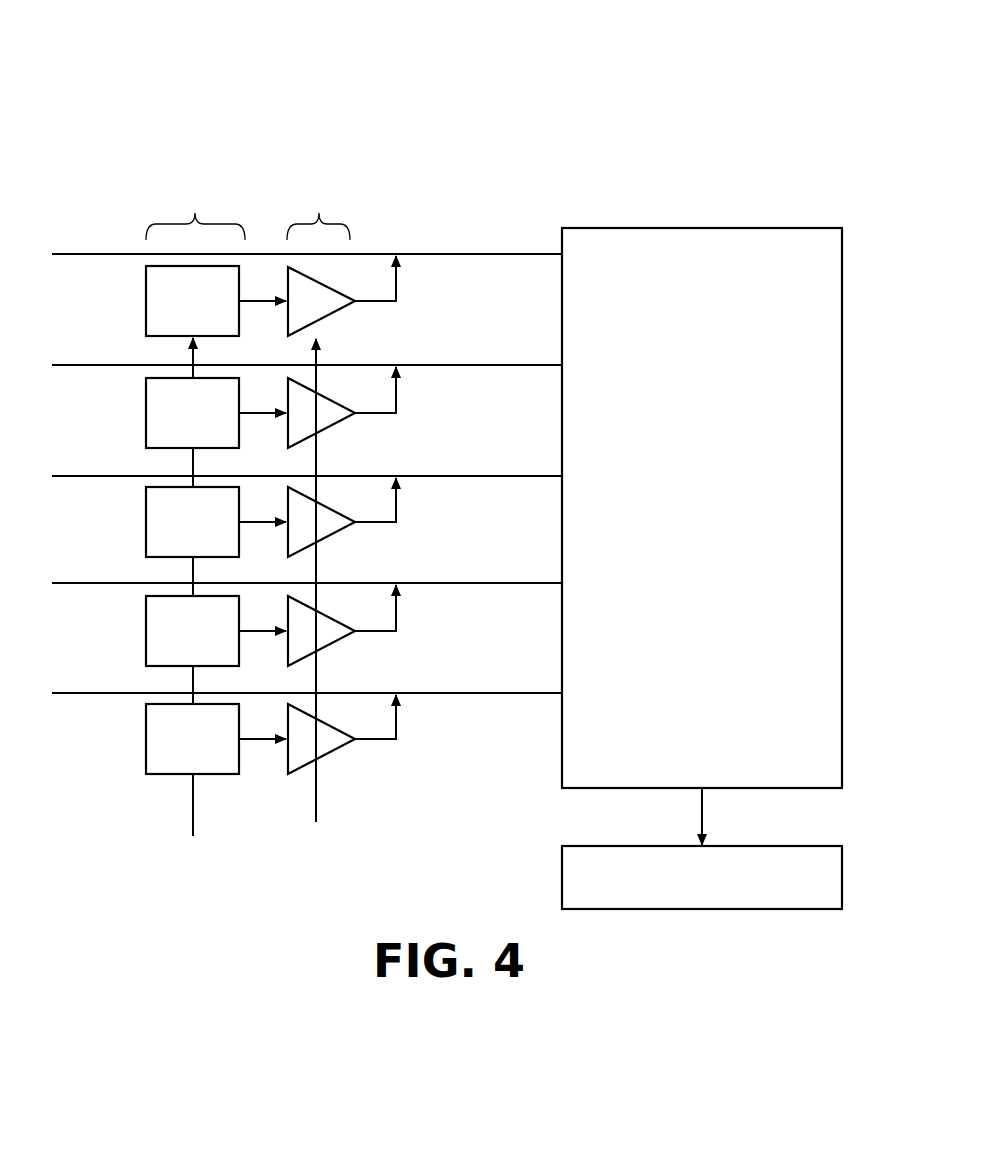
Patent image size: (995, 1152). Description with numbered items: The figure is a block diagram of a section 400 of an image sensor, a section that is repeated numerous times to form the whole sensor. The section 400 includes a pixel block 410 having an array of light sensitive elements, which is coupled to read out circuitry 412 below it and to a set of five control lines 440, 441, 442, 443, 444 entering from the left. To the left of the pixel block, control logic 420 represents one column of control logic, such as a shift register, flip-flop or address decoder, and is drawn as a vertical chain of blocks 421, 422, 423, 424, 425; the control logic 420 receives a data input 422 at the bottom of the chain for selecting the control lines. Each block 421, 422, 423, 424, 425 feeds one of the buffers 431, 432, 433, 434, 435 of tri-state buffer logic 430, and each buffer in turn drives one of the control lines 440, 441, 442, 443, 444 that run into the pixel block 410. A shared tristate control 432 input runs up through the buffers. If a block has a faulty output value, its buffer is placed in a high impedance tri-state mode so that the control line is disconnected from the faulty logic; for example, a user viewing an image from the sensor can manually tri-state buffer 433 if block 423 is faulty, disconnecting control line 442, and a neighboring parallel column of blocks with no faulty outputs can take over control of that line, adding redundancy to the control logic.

The section 400 is at (604, 90).
The pixel block 410 is at (702, 508).
The read out circuitry 412 is at (702, 848).
The control logic 420 is at (195, 212).
The block of control logic 421 is at (216, 322).
The block of control logic / data input 422 is at (153, 845).
The block of control logic 423 is at (216, 541).
The block of control logic 424 is at (216, 650).
The block of control logic 425 is at (216, 739).
The tri-state buffer logic 430 is at (318, 212).
The buffer 431 is at (342, 296).
The buffer 432 is at (350, 835).
The buffer 433 is at (342, 517).
The buffer 434 is at (342, 625).
The buffer 435 is at (342, 734).
The control line 440 is at (453, 254).
The control line 441 is at (453, 365).
The control line 442 is at (453, 476).
The control line 443 is at (453, 583).
The control line 444 is at (453, 693).